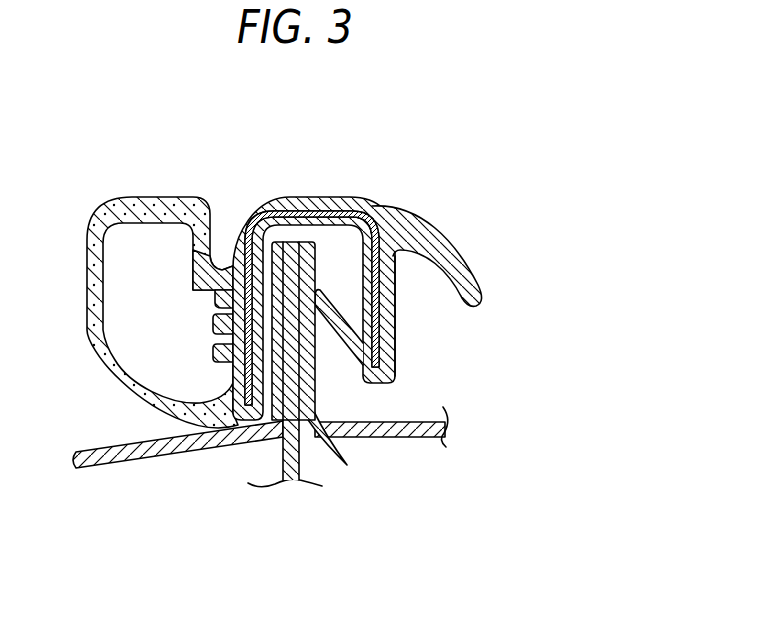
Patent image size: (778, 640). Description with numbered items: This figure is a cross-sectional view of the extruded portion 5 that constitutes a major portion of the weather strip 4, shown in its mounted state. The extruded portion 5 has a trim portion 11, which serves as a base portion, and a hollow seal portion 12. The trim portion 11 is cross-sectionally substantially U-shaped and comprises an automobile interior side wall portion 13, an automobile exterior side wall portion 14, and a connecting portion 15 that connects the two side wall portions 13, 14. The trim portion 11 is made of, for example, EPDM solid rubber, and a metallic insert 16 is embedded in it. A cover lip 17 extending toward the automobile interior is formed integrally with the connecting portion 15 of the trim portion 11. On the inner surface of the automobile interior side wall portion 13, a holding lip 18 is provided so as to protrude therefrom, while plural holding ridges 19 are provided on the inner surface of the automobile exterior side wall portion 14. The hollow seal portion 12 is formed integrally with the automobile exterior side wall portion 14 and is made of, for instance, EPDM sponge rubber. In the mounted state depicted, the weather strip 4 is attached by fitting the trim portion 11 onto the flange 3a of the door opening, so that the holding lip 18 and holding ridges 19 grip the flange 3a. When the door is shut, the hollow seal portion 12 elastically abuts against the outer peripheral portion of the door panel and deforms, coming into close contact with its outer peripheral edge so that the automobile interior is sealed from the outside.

The weather strip 4 is at (100, 156).
The extruded portion 5 is at (213, 270).
The flange 3a is at (289, 242).
The connecting portion 15 is at (318, 210).
The metallic insert 16 is at (352, 203).
The cover lip 17 is at (474, 268).
The automobile interior side wall portion 13 is at (393, 303).
The trim portion 11 is at (433, 337).
The holding lip 18 is at (335, 346).
The holding ridges 19 is at (335, 423).
The hollow seal portion 12 is at (86, 337).
The automobile exterior side wall portion 14 is at (233, 368).